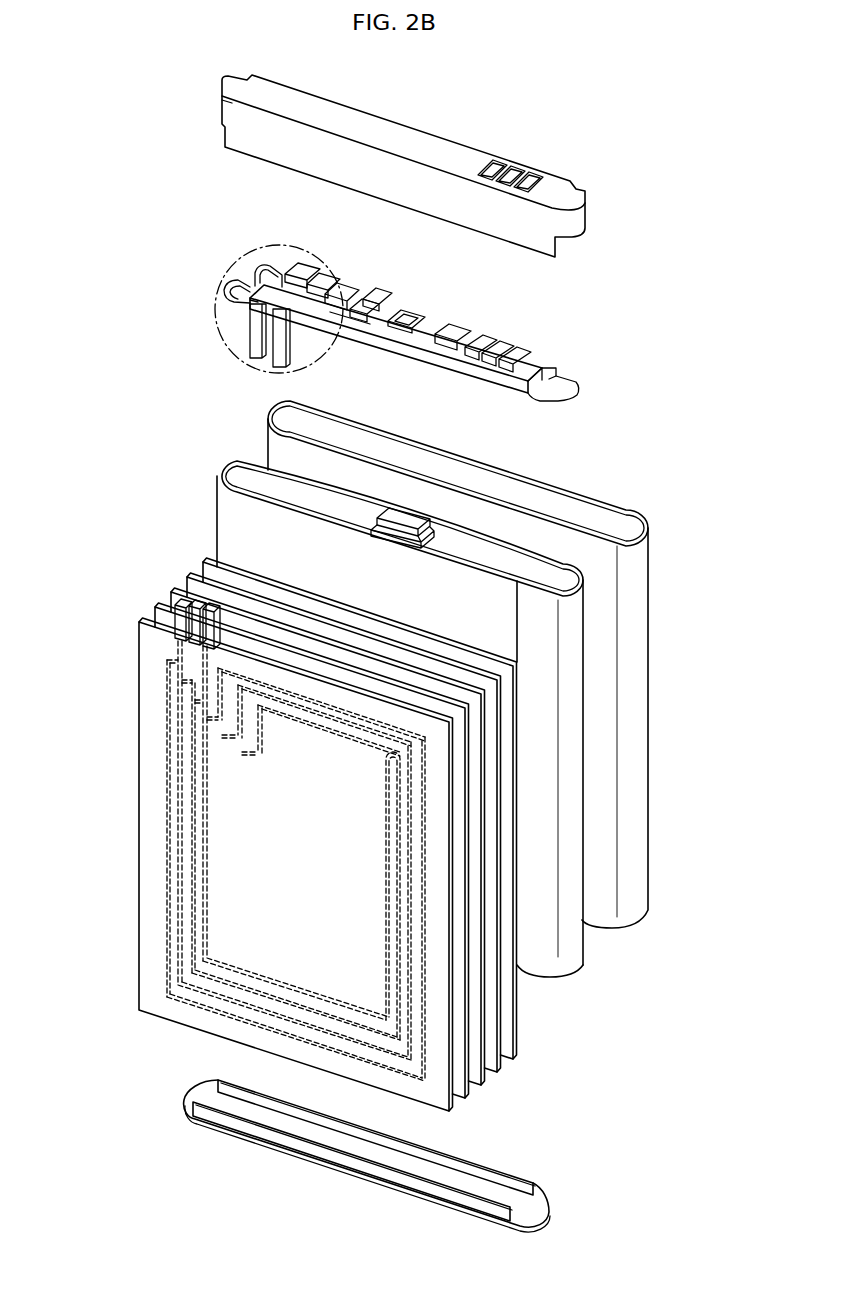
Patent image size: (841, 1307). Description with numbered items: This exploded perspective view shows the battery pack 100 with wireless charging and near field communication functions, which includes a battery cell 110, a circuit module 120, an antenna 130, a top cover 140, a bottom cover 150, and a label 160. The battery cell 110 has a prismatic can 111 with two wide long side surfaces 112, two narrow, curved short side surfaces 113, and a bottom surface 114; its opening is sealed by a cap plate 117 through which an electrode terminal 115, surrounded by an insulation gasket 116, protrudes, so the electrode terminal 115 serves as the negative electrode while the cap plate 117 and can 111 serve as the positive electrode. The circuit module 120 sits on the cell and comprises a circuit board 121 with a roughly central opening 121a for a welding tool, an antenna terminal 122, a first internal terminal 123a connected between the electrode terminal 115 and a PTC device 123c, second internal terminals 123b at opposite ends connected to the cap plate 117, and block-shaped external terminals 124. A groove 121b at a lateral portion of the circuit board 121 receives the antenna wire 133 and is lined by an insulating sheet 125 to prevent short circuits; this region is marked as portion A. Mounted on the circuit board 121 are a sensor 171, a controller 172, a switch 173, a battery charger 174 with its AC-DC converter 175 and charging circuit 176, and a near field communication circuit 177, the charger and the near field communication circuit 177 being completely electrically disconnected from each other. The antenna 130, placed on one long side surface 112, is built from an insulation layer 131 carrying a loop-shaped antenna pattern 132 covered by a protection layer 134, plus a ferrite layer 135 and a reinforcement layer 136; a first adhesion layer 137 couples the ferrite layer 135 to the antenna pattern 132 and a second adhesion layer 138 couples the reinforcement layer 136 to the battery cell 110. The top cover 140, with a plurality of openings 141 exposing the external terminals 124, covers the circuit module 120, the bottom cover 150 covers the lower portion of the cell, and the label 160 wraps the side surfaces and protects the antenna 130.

The battery pack 100 is at (660, 123).
The battery cell 110 is at (469, 742).
The can 111 is at (585, 988).
The long side surfaces 112 is at (540, 683).
The short side surfaces 113 is at (575, 817).
The bottom surface 114 is at (523, 970).
The electrode terminal 115 is at (417, 493).
The insulation gasket 116 is at (430, 517).
The cap plate 117 is at (513, 557).
The circuit module 120 is at (396, 320).
The circuit board 121 is at (345, 361).
The opening 121a is at (355, 320).
The groove 121b is at (258, 298).
The antenna terminal 122 is at (272, 268).
The first internal terminal 123a is at (406, 359).
The second internal terminals 123b is at (236, 284).
The positive temperature coefficient (PTC) device 123c is at (412, 330).
The external terminals 124 is at (523, 341).
The insulating sheet 125 is at (247, 335).
The enlarged portion A is at (240, 357).
The antenna 130 is at (291, 813).
The insulation layer 131 is at (138, 618).
The antenna pattern 132 is at (165, 820).
The antenna wire 133 is at (183, 630).
The protection layer 134 is at (145, 720).
The ferrite layer 135 is at (290, 640).
The reinforcement layer 136 is at (360, 640).
The first adhesion layer 137 is at (256, 645).
The second adhesion layer 138 is at (413, 645).
The top cover 140 is at (403, 162).
The openings 141 is at (513, 170).
The bottom cover 150 is at (537, 1207).
The label 160 is at (642, 513).
The sensor 171 is at (300, 262).
The controller 172 is at (335, 272).
The switch 173 is at (352, 284).
The battery charger 174 is at (414, 280).
The AC-DC converter 175 is at (363, 300).
The charging circuit 176 is at (388, 294).
The near field communication circuit 177 is at (457, 328).